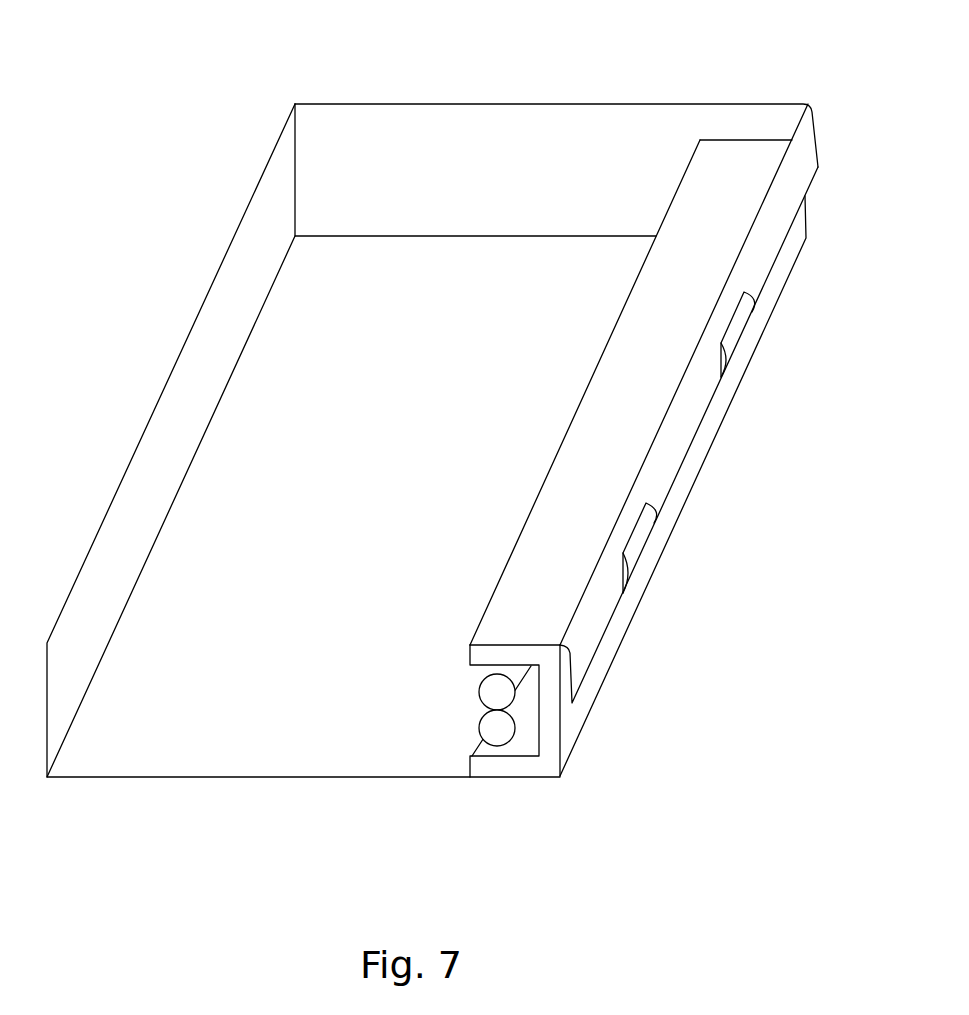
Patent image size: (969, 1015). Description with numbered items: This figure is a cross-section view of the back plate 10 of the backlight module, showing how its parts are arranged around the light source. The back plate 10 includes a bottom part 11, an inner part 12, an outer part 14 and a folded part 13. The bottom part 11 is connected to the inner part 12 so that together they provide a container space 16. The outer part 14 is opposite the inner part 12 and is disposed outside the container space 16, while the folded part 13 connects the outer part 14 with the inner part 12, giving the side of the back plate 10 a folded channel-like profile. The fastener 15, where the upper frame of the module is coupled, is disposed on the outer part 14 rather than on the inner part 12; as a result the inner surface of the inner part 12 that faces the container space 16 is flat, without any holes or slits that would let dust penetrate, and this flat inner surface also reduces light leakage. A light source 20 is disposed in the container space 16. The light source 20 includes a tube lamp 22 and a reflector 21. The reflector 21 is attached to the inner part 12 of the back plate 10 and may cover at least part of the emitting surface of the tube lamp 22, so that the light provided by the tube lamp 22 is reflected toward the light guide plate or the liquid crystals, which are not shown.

The back plate 10 is at (305, 92).
The bottom part 11 is at (187, 740).
The inner part 12 is at (680, 493).
The folded part 13 is at (783, 160).
The outer part 14 is at (762, 247).
The fastener 15 is at (737, 328).
The container space 16 is at (278, 392).
The light source 20 is at (718, 638).
The reflector 21 is at (528, 618).
The tube lamp 22 is at (495, 728).